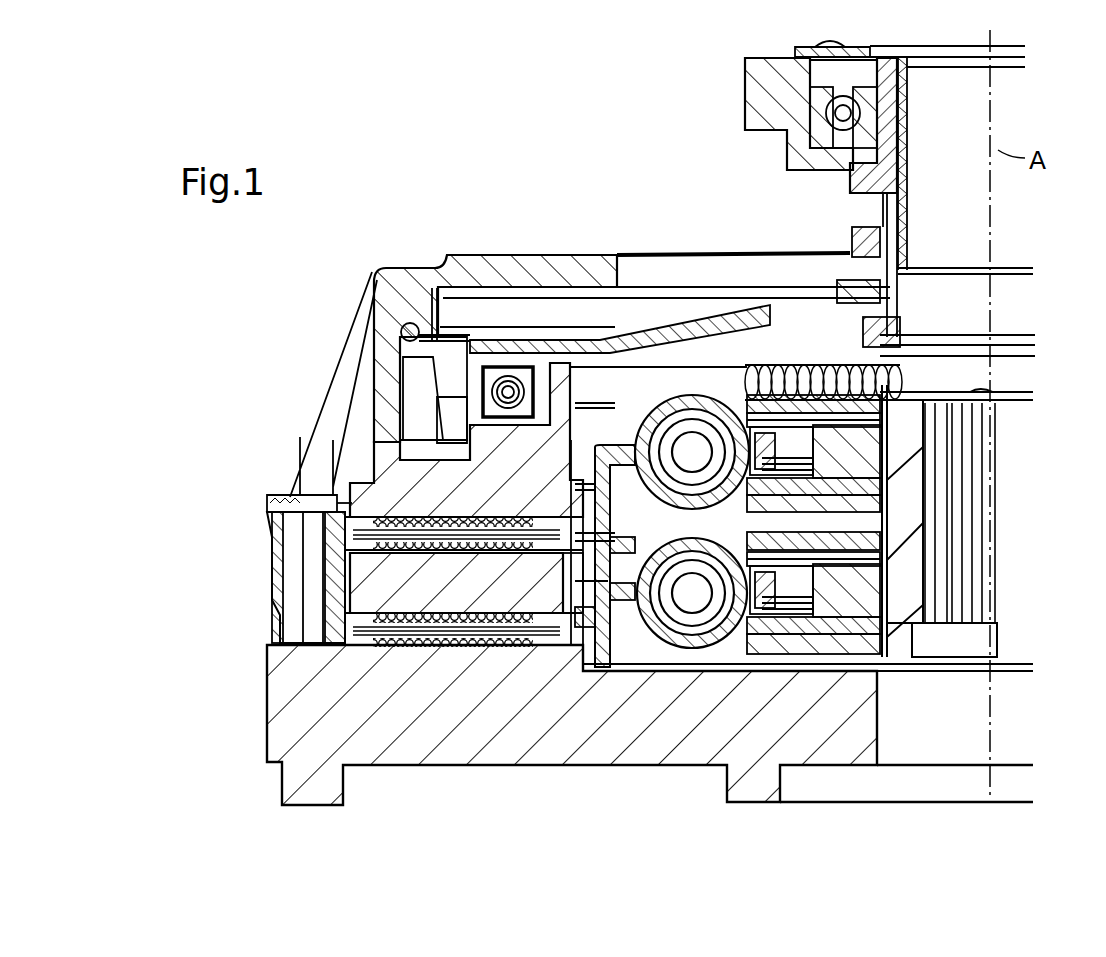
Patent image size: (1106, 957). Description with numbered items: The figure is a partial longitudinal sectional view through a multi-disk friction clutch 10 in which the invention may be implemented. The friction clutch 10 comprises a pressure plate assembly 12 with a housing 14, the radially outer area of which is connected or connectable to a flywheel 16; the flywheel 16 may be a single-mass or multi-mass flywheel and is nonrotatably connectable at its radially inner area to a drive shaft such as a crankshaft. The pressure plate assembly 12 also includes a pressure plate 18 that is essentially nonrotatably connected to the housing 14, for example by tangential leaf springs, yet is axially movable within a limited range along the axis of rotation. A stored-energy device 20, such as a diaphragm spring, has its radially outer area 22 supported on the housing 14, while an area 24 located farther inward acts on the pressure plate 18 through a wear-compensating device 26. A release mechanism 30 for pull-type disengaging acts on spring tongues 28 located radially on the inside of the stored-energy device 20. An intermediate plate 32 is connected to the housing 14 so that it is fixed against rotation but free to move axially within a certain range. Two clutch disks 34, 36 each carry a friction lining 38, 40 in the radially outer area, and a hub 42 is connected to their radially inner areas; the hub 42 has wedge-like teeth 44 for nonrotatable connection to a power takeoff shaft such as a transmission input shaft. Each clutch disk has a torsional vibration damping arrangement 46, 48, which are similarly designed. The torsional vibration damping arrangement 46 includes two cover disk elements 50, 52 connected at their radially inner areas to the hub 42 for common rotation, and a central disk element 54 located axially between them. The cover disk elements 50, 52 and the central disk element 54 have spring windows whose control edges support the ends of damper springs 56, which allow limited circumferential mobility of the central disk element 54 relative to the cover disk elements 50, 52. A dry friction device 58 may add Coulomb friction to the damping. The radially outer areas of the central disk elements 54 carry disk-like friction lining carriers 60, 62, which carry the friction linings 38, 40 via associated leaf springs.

The friction clutch 10 is at (405, 212).
The pressure plate assembly 12 is at (320, 332).
The housing 14 is at (377, 268).
The flywheel 16 is at (268, 727).
The pressure plate 18 is at (362, 463).
The stored-energy device 20 is at (522, 340).
The radially outer area 22 is at (425, 333).
The area 24 is at (470, 340).
The wear-compensating device 26 is at (443, 378).
The spring tongues 28 is at (721, 318).
The release mechanism 30 is at (717, 113).
The intermediate plate 32 is at (350, 583).
The clutch disk 34 is at (545, 650).
The clutch disk 36 is at (648, 667).
The friction lining 38 is at (277, 494).
The friction lining 40 is at (347, 653).
The hub 42 is at (1018, 380).
The wedge-like teeth 44 is at (975, 532).
The torsional vibration damping arrangement 46 is at (892, 320).
The torsional vibration damping arrangement 48 is at (797, 643).
The cover disk element 50 is at (900, 362).
The cover disk element 52 is at (887, 510).
The central disk element 54 is at (680, 560).
The damper spring 56 is at (920, 267).
The dry friction device 58 is at (905, 337).
The friction lining carrier 60 is at (345, 532).
The friction lining carrier 62 is at (347, 633).